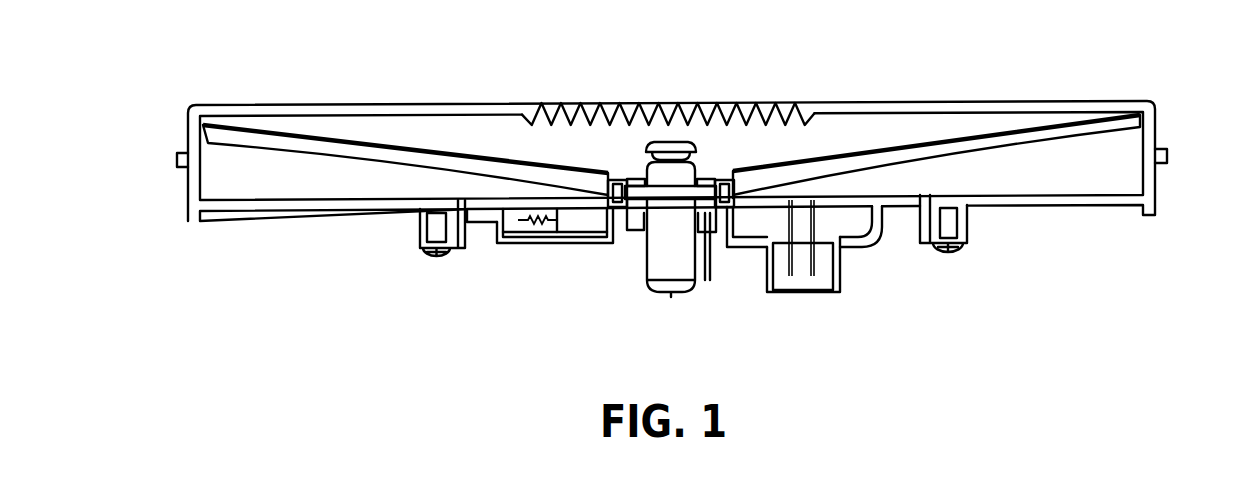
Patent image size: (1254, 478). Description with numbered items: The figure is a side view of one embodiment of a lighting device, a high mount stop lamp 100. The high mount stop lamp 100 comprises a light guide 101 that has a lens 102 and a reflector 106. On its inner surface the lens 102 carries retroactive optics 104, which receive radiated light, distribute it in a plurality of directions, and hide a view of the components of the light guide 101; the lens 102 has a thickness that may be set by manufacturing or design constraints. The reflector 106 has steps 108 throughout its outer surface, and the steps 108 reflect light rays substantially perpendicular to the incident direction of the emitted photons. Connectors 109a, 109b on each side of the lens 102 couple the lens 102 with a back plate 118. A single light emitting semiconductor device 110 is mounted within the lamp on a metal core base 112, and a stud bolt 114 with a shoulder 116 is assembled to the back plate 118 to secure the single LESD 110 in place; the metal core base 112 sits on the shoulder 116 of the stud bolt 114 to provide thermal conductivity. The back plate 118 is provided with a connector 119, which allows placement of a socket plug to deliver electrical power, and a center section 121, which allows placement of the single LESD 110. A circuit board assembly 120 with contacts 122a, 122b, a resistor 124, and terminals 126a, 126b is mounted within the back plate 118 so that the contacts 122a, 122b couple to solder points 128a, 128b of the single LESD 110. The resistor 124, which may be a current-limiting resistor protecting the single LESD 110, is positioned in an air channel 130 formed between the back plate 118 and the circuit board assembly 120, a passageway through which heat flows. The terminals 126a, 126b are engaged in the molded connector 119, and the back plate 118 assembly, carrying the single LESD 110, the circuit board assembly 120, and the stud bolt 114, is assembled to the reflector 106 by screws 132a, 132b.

The high mount stop lamp 100 is at (355, 60).
The light guide 101 is at (341, 192).
The lens 102 is at (487, 105).
The retroactive optics 104 is at (578, 105).
The reflector 106 is at (1052, 142).
The steps 108 is at (957, 140).
The connector 109a is at (176, 160).
The connector 109b is at (1203, 148).
The single light emitting semiconductor device 110 is at (672, 138).
The metal core base 112 is at (704, 234).
The stud bolt 114 is at (672, 296).
The shoulder 116 is at (638, 203).
The back plate 118 is at (580, 246).
The connector 119 is at (772, 295).
The circuit board assembly 120 is at (570, 211).
The center section 121 is at (708, 246).
The contact 122a is at (617, 178).
The contact 122b is at (728, 177).
The resistor 124 is at (529, 227).
The terminal 126a is at (791, 278).
The terminal 126b is at (817, 277).
The solder point 128a is at (638, 177).
The solder point 128b is at (707, 177).
The air channel 130 is at (600, 224).
The screw 132a is at (437, 262).
The screw 132b is at (947, 258).